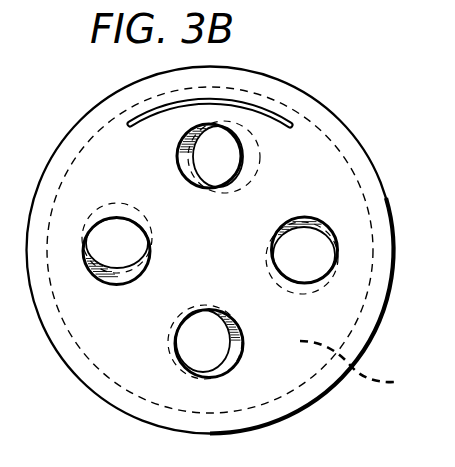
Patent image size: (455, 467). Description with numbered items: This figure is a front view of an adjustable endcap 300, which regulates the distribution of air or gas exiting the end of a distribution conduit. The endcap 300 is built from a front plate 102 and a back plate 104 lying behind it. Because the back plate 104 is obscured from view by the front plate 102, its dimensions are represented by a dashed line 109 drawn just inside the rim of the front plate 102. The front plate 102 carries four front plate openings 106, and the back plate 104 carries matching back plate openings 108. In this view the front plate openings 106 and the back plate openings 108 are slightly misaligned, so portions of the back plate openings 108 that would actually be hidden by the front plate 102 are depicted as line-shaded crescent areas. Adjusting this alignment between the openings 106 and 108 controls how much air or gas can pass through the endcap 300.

The adjustable endcap 300 is at (360, 110).
The front plate 102 is at (373, 311).
The back plate 104 is at (366, 367).
The front plate openings 106 is at (338, 241).
The back plate openings 108 is at (228, 359).
The dashed line 109 is at (351, 167).